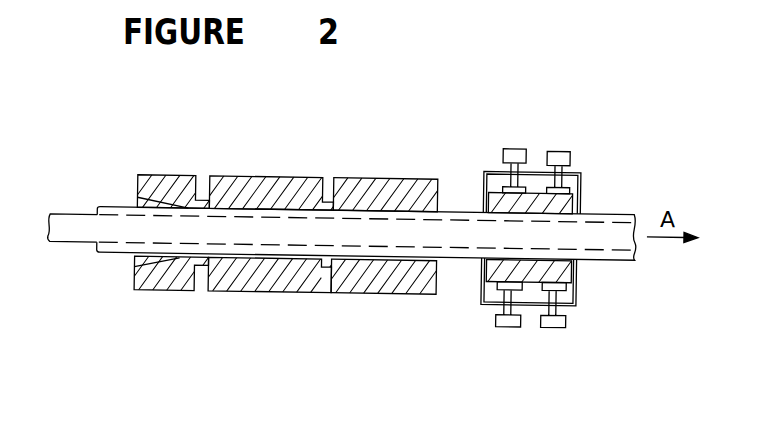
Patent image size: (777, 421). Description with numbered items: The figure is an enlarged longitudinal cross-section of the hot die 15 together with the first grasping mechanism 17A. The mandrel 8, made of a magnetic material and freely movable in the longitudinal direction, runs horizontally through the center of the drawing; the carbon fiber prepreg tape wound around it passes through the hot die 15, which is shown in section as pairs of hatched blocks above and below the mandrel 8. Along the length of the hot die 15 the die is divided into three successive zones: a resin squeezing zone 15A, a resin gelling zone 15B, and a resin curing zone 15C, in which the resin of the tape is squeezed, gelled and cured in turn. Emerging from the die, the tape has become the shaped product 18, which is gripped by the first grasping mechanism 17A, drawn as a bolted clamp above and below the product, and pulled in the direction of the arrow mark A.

The mandrel 8 is at (65, 248).
The shaped product 18 is at (463, 253).
The hot die 15 is at (172, 284).
The resin squeezing zone 15A is at (167, 181).
The resin gelling zone 15B is at (262, 178).
The resin curing zone 15C is at (380, 176).
The first grasping mechanism 17A is at (578, 176).